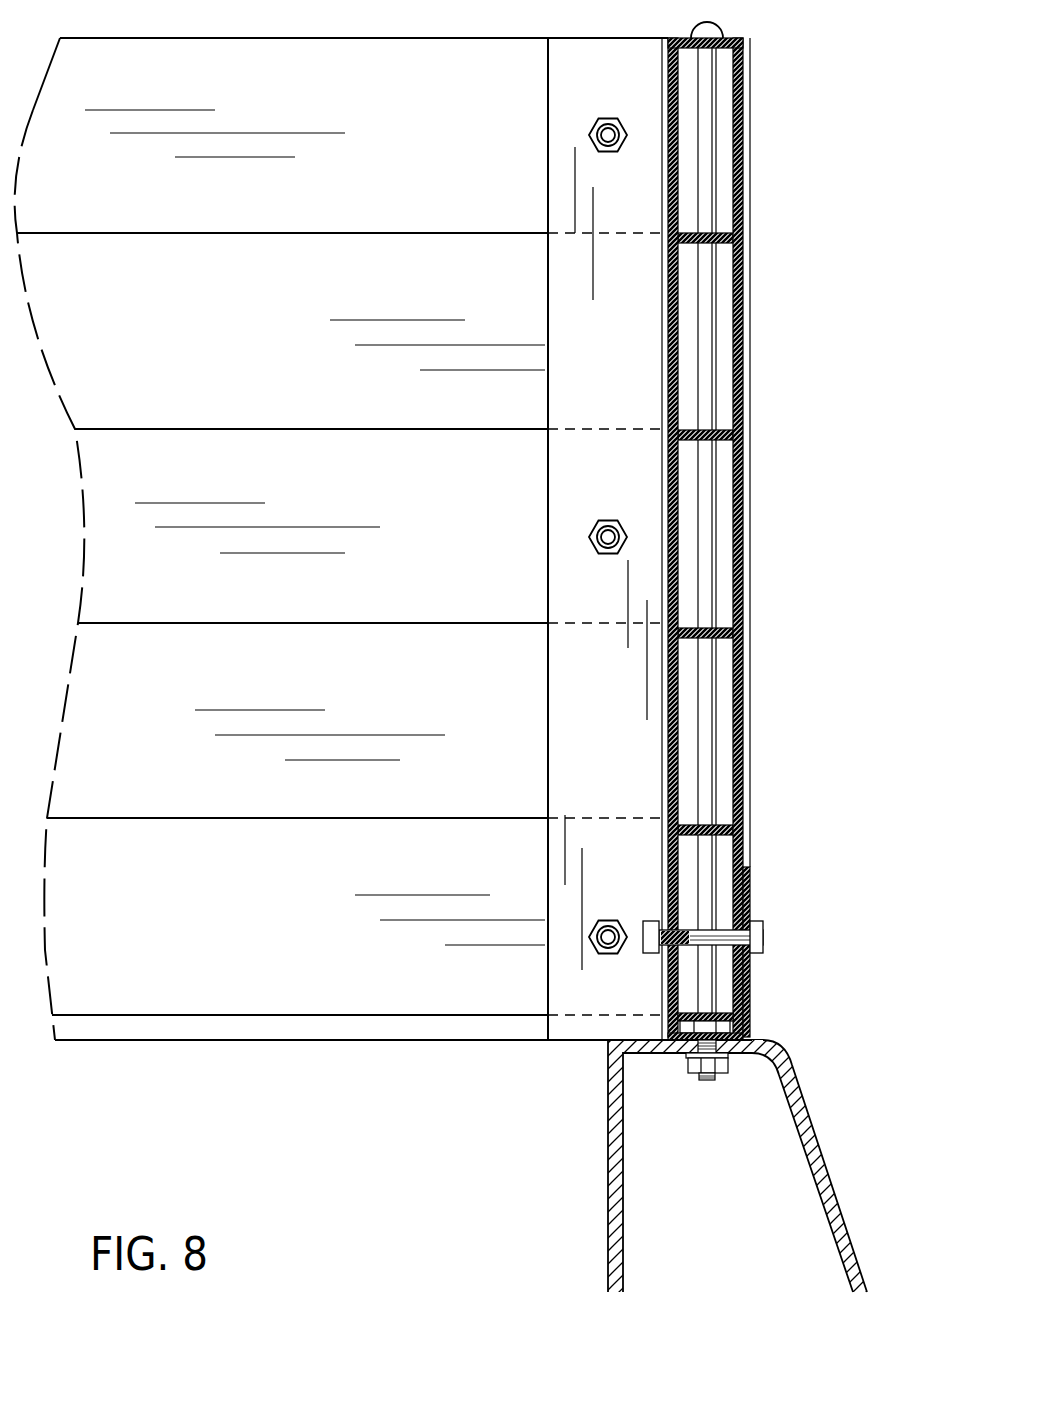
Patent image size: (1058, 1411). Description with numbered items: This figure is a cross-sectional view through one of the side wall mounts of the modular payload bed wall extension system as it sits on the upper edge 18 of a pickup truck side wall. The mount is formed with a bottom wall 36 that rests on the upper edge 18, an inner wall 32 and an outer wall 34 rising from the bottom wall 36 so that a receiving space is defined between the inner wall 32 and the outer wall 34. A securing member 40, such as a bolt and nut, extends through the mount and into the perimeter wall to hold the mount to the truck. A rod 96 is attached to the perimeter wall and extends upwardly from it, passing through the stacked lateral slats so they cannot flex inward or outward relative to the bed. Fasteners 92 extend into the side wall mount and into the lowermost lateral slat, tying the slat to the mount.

The upper edge 18 is at (767, 1036).
The inner wall 32 is at (660, 985).
The outer wall 34 is at (753, 978).
The bottom wall 36 is at (672, 1053).
The securing member 40 is at (753, 1022).
The fastener 92 is at (627, 137).
The rod 96 is at (705, 323).